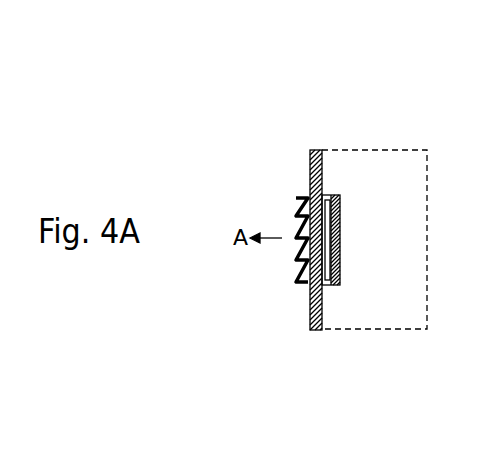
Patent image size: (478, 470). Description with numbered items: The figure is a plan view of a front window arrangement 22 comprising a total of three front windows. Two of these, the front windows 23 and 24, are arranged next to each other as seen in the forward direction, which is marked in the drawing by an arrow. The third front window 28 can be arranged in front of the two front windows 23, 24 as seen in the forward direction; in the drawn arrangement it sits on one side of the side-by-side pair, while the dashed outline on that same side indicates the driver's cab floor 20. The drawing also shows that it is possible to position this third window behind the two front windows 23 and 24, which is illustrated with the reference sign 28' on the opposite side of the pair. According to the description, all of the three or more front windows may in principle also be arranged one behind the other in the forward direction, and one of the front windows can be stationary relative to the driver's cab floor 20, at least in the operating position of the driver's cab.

The driver's cab floor 20 is at (410, 315).
The front window arrangement 22 is at (267, 153).
The front window 23 is at (318, 331).
The front window 24 is at (315, 150).
The front window 28 is at (361, 240).
The front window 28' is at (259, 245).